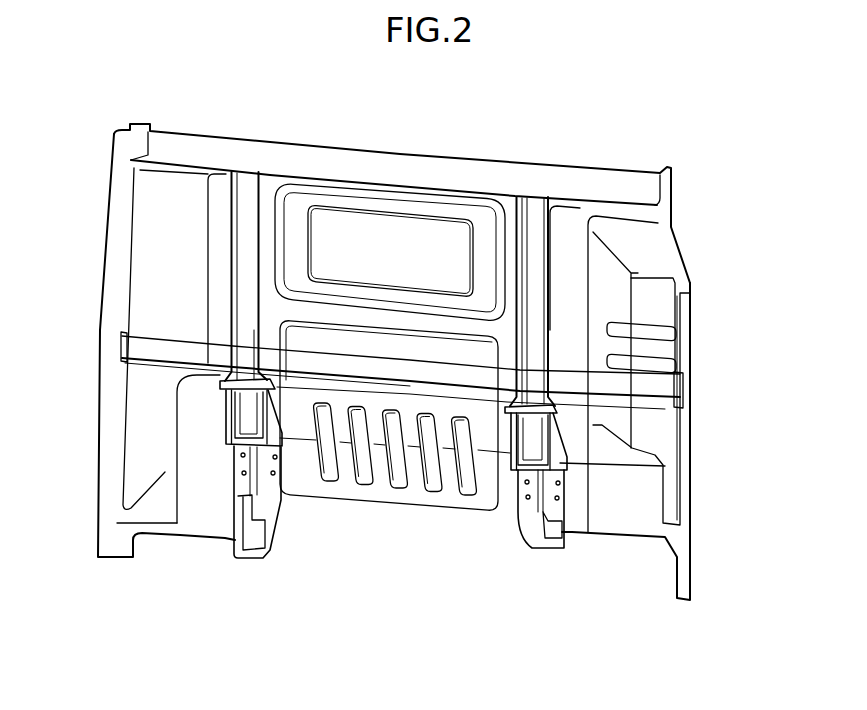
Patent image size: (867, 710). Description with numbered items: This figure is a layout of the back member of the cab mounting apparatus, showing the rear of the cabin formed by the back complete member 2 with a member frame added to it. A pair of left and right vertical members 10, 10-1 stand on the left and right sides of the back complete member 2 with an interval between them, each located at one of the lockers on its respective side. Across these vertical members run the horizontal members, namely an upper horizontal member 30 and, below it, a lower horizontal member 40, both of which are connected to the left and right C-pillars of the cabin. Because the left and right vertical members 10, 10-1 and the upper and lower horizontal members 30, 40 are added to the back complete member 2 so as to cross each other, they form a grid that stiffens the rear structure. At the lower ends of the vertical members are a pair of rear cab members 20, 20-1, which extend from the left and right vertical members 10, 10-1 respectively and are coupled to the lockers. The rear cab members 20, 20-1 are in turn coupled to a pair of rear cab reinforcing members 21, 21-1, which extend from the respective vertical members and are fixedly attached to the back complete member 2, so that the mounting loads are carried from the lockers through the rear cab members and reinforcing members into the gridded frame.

The back complete member 2 is at (633, 282).
The left vertical member 10 is at (247, 277).
The right vertical member 10-1 is at (533, 308).
The left rear cab member 20 is at (243, 415).
The right rear cab member 20-1 is at (522, 443).
The left rear cab reinforcing member 21 is at (247, 493).
The right rear cab reinforcing member 21-1 is at (538, 533).
The upper horizontal member 30 is at (360, 167).
The lower horizontal member 40 is at (368, 370).